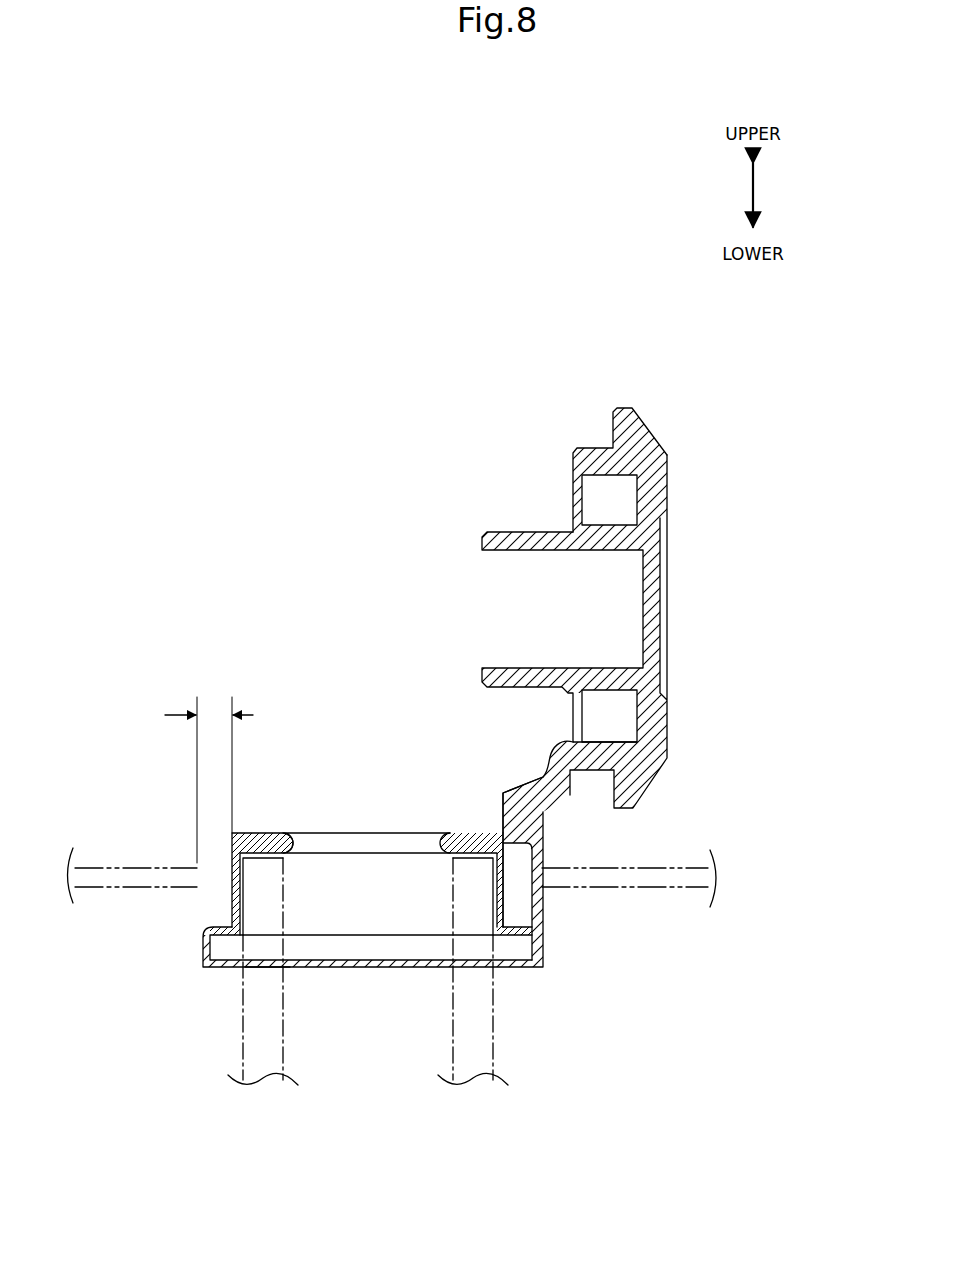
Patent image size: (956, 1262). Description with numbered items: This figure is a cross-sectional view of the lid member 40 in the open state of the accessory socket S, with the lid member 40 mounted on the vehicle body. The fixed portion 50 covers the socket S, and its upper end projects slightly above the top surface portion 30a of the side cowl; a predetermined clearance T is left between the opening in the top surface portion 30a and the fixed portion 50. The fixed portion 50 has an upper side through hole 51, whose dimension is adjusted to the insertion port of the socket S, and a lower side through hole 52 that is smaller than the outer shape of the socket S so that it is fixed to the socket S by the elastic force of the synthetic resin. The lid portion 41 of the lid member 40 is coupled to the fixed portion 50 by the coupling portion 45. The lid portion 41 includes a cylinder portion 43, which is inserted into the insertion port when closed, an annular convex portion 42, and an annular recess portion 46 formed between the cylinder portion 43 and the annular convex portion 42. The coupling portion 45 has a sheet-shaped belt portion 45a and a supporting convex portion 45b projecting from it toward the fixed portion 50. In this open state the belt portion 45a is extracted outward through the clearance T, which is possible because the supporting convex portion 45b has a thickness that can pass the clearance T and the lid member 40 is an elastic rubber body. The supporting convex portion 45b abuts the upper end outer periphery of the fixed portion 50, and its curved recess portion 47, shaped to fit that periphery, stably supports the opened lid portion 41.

The lid member 40 is at (325, 410).
The lid portion 41 is at (638, 430).
The annular convex portion 42 is at (594, 455).
The cylinder portion 43 is at (517, 540).
The coupling portion 45 is at (521, 770).
The belt portion 45a is at (544, 912).
The supporting convex portion 45b is at (513, 810).
The annular recess portion 46 is at (594, 499).
The curved recess portion 47 is at (441, 853).
The fixed portion 50 is at (262, 842).
The upper side through hole 51 is at (295, 844).
The lower side through hole 52 is at (267, 970).
The top surface portion 30a is at (125, 865).
The accessory socket S is at (240, 1005).
The clearance T is at (209, 773).